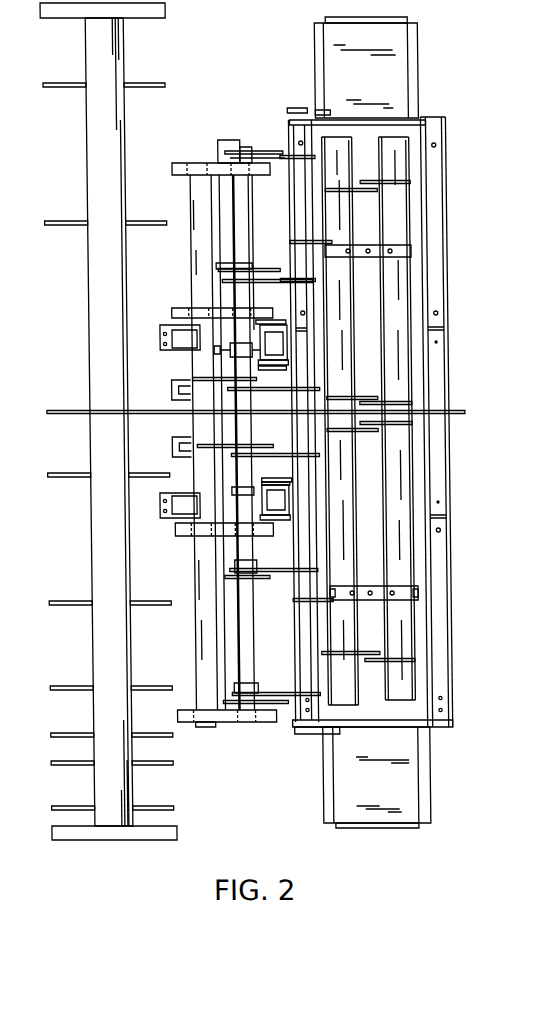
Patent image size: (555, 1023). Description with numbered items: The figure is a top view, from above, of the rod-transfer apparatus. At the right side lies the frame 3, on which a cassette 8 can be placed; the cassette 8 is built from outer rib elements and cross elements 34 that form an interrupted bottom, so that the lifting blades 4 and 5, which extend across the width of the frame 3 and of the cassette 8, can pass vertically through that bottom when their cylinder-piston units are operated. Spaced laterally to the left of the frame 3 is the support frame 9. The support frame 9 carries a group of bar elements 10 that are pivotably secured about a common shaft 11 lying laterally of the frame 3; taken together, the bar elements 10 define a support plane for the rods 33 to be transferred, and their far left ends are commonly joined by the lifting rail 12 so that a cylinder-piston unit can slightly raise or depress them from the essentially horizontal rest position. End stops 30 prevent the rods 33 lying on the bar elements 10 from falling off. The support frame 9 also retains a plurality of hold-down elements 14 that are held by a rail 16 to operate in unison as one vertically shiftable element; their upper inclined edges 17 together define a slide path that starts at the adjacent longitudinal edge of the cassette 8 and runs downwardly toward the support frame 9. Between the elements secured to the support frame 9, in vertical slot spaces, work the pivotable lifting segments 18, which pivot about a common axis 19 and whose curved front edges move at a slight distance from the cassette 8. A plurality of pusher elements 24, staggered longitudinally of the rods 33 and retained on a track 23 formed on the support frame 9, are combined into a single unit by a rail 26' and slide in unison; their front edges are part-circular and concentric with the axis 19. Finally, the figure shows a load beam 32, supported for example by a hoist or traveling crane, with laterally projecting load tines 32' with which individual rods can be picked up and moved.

The frame 3 is at (440, 598).
The lifting blade 4 is at (386, 183).
The lifting blade 5 is at (363, 192).
The cassette 8 is at (397, 38).
The support frame 9 is at (154, 500).
The bar element 10 is at (206, 163).
The shaft 11 is at (258, 322).
The lifting rail 12 is at (184, 660).
The hold-down element 14 is at (327, 110).
The rail 16 is at (294, 108).
The inclined edge 17 is at (309, 730).
The lifting element 18 is at (271, 575).
The axis 19 is at (241, 210).
The track 23 is at (232, 350).
The pusher element 24 is at (256, 722).
The rail 26' is at (165, 426).
The end stop 30 is at (173, 163).
The load beam 32 is at (105, 421).
The load tine 32' is at (102, 664).
The rod 33 is at (152, 83).
The cross element 34 is at (393, 585).